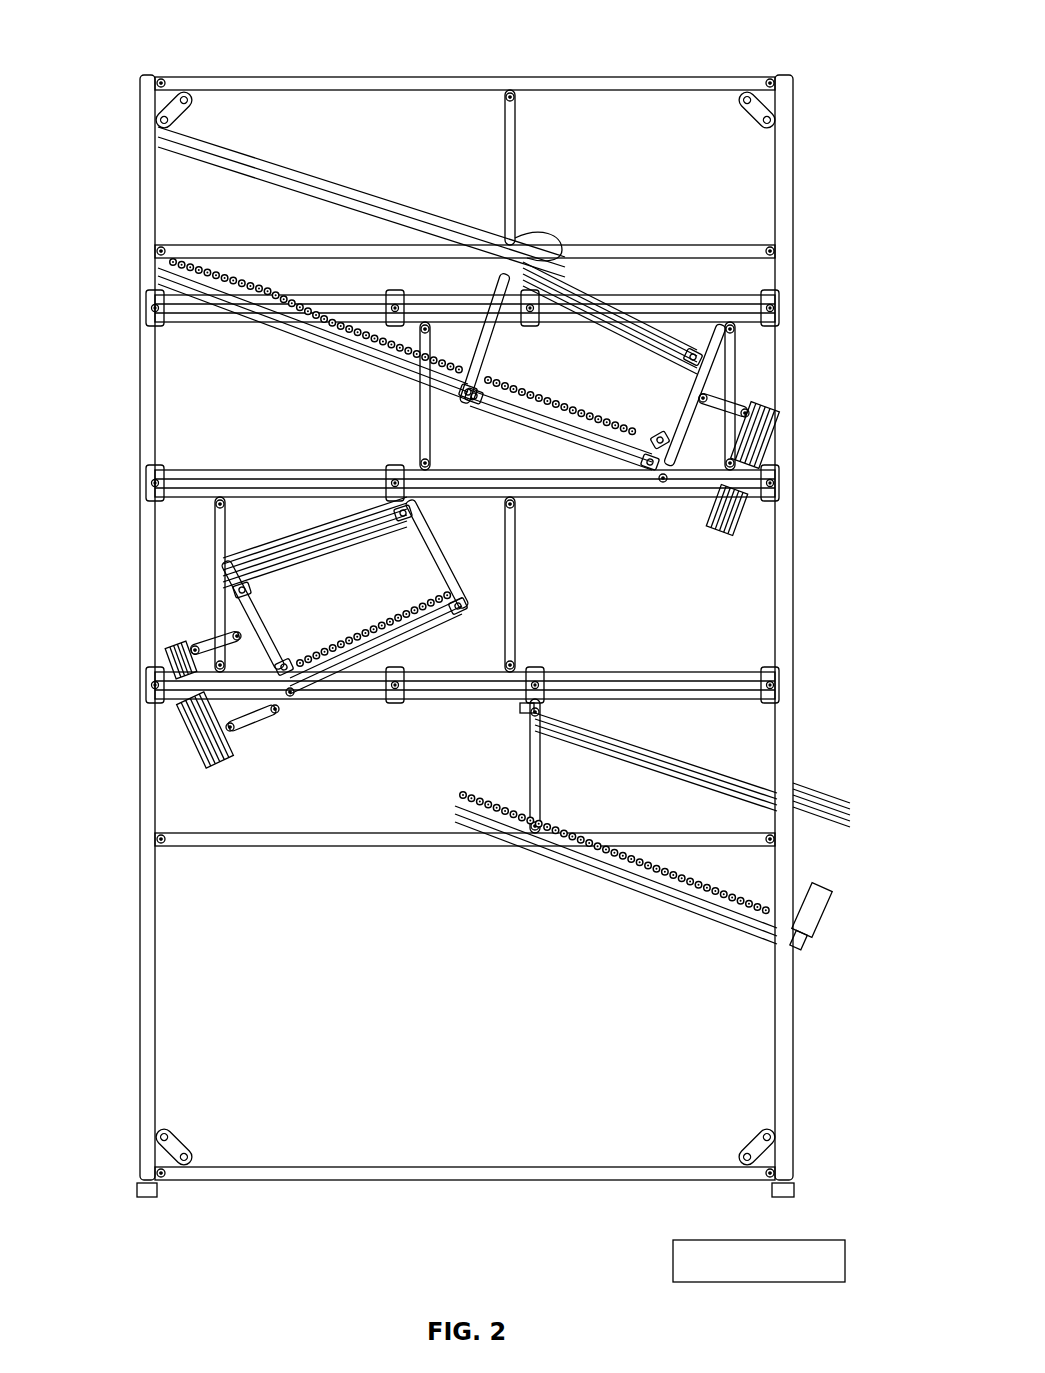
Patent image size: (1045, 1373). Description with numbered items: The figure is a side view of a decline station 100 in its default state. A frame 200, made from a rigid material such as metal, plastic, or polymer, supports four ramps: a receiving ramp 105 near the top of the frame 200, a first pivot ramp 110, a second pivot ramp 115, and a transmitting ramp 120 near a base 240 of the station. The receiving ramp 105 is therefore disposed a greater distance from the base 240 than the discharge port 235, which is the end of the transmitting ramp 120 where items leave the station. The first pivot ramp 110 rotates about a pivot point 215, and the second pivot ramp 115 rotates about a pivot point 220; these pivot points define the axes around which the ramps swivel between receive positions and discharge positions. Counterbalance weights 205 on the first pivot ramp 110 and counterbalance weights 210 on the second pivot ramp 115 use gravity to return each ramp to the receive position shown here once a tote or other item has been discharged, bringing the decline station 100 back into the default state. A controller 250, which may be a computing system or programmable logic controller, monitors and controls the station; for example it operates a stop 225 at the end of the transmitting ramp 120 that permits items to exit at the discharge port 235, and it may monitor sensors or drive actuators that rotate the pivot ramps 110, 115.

The decline station 100 is at (135, 40).
The frame 200 is at (668, 80).
The receiving ramp 105 is at (300, 325).
The first pivot ramp 110 is at (588, 390).
The second pivot ramp 115 is at (330, 628).
The transmitting ramp 120 is at (677, 900).
The counterbalance weights 205 is at (767, 447).
The counterbalance weights 210 is at (197, 713).
The pivot point 215 is at (662, 486).
The pivot point 220 is at (289, 701).
The stop 225 is at (828, 920).
The discharge port 235 is at (812, 861).
The base 240 is at (505, 1186).
The controller 250 is at (815, 1241).